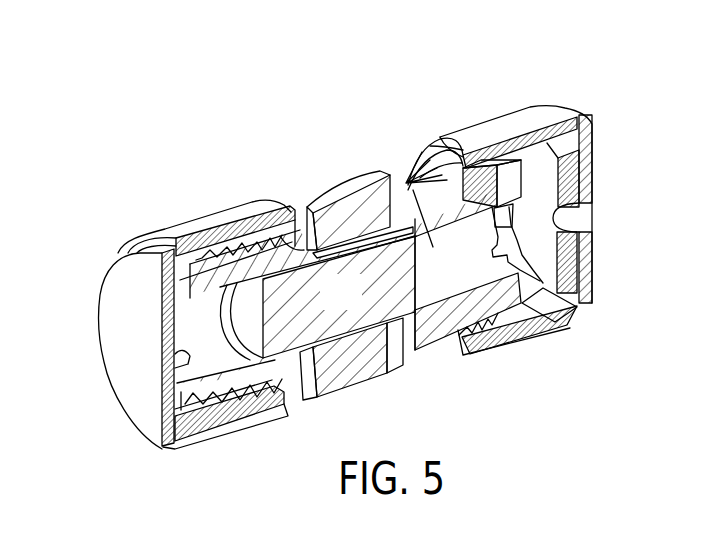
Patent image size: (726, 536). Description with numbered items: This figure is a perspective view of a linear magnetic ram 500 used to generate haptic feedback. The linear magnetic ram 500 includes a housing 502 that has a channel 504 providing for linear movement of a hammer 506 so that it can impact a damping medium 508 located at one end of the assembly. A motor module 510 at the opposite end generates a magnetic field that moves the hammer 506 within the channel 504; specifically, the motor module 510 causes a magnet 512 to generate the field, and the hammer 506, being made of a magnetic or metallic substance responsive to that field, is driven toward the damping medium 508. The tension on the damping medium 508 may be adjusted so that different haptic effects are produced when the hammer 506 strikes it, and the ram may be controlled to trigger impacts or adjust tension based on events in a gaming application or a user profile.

The linear magnetic ram 500 is at (588, 81).
The housing 502 is at (205, 220).
The channel 504 is at (407, 178).
The hammer 506 is at (355, 306).
The damping medium 508 is at (110, 320).
The motor module 510 is at (492, 132).
The magnet 512 is at (333, 200).